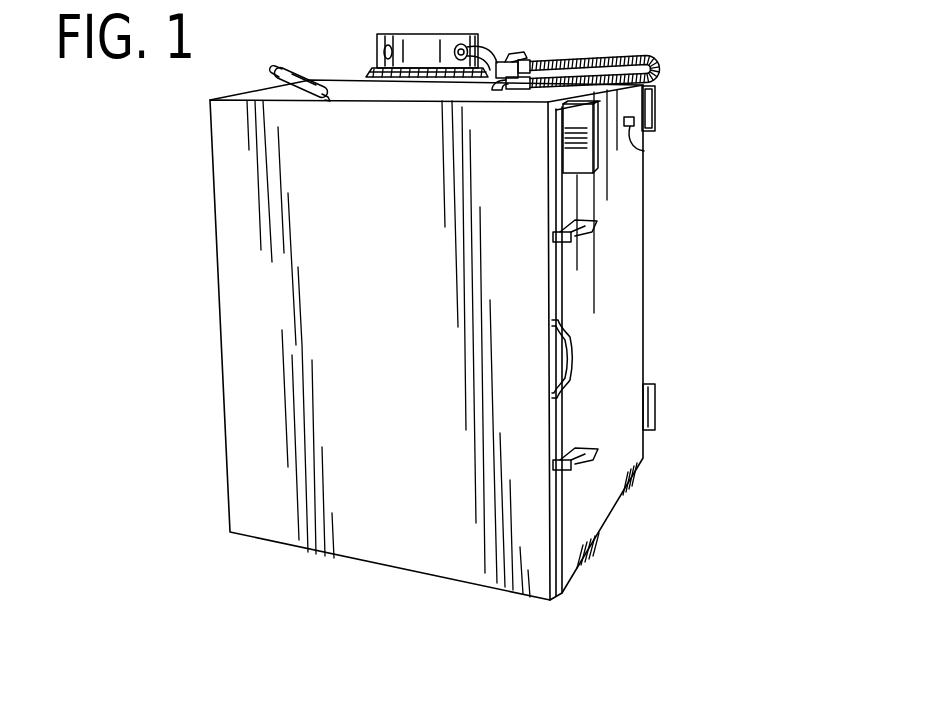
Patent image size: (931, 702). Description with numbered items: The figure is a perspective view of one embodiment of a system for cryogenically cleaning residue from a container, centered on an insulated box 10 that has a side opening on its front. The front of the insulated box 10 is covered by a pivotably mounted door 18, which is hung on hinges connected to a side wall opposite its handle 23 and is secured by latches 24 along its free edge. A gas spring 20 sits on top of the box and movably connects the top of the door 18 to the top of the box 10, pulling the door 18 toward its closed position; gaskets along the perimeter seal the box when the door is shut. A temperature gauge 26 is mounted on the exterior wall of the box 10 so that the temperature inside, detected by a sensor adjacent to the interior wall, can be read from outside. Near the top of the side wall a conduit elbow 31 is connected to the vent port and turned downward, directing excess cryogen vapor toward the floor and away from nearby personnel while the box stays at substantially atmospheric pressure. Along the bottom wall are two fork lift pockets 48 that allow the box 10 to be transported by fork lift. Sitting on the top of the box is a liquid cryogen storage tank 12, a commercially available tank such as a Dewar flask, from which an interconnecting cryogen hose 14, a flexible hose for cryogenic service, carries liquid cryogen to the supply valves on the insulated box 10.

The insulated box 10 is at (716, 243).
The liquid cryogen storage tank 12 is at (424, 34).
The interconnecting cryogen hose 14 is at (645, 56).
The door 18 is at (238, 213).
The gas spring 20 is at (306, 68).
The handle 23 is at (572, 364).
The latches 24 is at (593, 230).
The temperature gauge 26 is at (583, 148).
The conduit elbow 31 is at (644, 151).
The fork lift pockets 48 is at (655, 126).